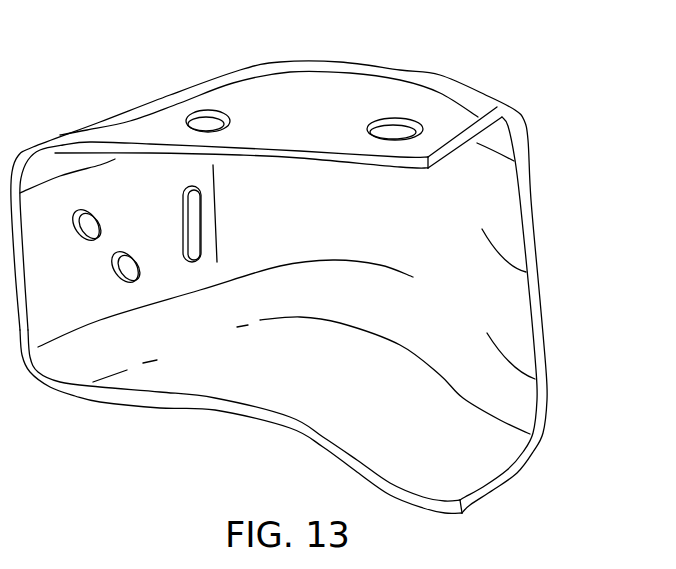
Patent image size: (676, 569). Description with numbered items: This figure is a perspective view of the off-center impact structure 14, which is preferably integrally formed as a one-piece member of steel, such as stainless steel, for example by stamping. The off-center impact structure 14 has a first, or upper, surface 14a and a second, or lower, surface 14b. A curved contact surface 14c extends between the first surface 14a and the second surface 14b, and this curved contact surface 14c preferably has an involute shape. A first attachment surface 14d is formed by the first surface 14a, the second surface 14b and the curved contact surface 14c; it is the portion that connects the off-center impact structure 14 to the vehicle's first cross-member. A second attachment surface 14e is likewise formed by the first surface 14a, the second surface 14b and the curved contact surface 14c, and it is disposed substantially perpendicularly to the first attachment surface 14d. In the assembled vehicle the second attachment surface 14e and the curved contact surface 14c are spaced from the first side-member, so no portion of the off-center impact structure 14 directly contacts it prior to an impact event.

The off-center impact structure 14 is at (541, 182).
The first surface 14a is at (347, 100).
The second surface 14b is at (268, 373).
The curved contact surface 14c is at (526, 272).
The first attachment surface 14d is at (157, 155).
The second attachment surface 14e is at (541, 393).